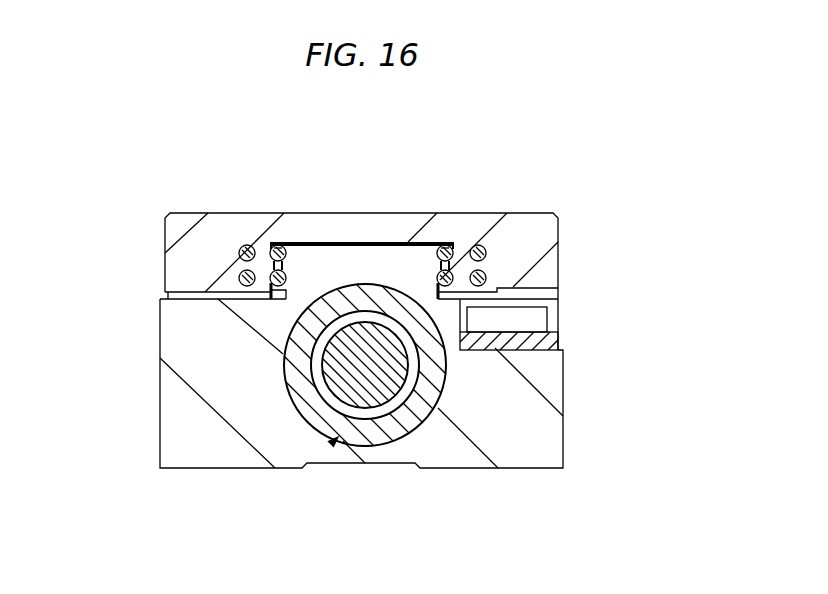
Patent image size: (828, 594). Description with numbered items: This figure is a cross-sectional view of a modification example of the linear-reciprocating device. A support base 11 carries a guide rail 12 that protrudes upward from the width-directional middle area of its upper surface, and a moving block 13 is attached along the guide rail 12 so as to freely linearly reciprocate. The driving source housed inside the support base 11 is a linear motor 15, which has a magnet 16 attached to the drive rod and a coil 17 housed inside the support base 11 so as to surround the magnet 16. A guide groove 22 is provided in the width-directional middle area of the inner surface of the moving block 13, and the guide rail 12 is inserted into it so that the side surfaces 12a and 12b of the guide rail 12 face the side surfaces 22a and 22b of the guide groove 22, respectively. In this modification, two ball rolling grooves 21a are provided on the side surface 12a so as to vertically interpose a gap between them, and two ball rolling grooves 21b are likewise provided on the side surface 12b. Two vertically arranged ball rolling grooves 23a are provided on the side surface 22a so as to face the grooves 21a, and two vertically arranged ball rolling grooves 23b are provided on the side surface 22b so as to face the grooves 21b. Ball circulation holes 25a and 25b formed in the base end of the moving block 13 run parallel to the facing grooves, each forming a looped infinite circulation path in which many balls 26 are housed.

The support base 11 is at (512, 440).
The guide rail 12 is at (389, 272).
The side surface of the guide rail 12a is at (250, 305).
The side surface of the guide rail 12b is at (462, 300).
The moving block 13 is at (523, 226).
The linear motor 15 is at (331, 444).
The magnet 16 is at (363, 375).
The coil 17 is at (400, 425).
The ball rolling groove 21a is at (300, 244).
The ball rolling groove 21b is at (418, 240).
The guide groove 22 is at (356, 242).
The side surface of the guide groove 22a is at (273, 243).
The side surface of the guide groove 22b is at (445, 244).
The ball rolling groove 23a is at (268, 270).
The ball rolling groove 23b is at (454, 258).
The ball circulation hole 25a is at (238, 252).
The ball circulation hole 25b is at (487, 252).
The balls 26 is at (236, 278).